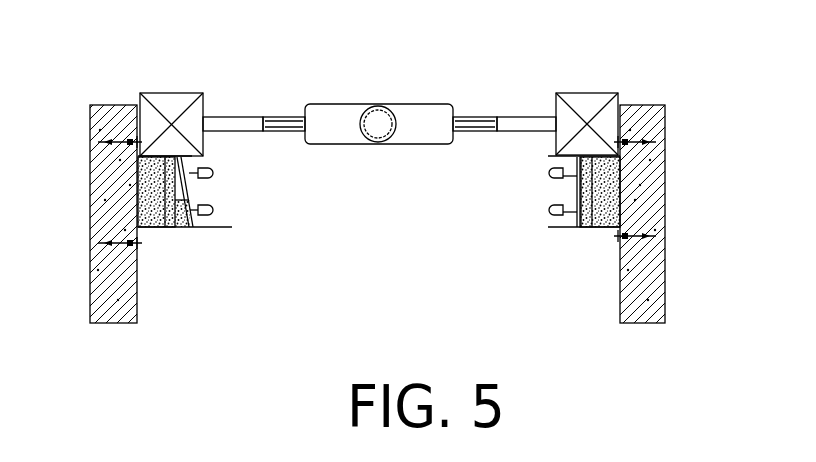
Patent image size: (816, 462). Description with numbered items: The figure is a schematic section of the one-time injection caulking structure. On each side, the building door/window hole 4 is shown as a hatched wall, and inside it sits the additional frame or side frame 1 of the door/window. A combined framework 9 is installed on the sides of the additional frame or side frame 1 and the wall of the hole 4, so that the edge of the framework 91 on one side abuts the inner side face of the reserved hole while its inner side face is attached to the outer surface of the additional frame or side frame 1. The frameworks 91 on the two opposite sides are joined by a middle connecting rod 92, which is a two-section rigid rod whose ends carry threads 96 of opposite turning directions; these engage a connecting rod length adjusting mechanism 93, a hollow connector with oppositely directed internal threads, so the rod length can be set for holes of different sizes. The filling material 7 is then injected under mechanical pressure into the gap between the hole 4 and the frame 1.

The additional frame or side frame 1 is at (578, 205).
The building door/window hole 4 is at (392, 204).
The filling material 7 is at (382, 151).
The combined framework 9 is at (601, 91).
The framework 91 is at (141, 92).
The middle connecting rod 92 is at (522, 122).
The connecting rod length adjusting mechanism 93 is at (379, 94).
The threads 96 is at (468, 123).